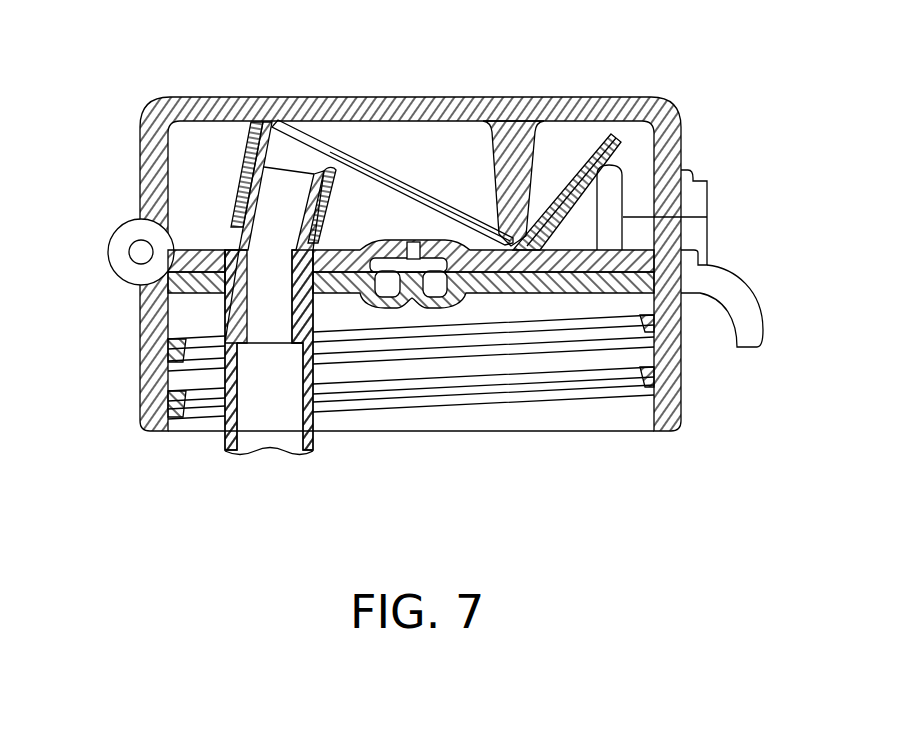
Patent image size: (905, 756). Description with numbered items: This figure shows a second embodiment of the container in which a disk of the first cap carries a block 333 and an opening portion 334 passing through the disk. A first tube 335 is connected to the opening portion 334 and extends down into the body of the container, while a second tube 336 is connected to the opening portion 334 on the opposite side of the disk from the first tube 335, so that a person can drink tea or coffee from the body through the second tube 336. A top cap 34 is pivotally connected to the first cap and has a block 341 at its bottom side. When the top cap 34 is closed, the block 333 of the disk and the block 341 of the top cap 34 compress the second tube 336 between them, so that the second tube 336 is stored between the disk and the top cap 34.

The top cap 34 is at (358, 108).
The block 341 is at (517, 196).
The opening portion 334 is at (233, 238).
The first tube 335 is at (260, 404).
The second tube 336 is at (612, 152).
The block 333 is at (612, 233).